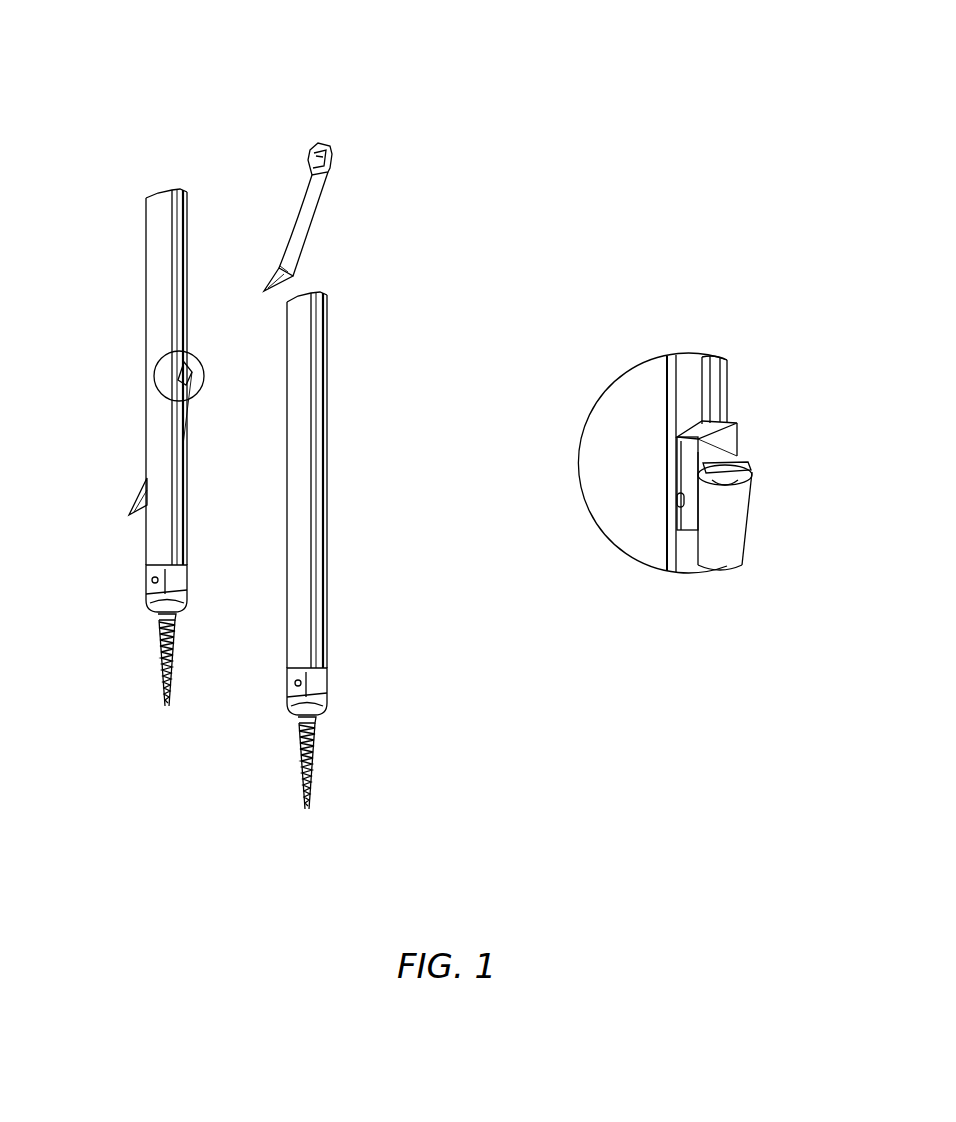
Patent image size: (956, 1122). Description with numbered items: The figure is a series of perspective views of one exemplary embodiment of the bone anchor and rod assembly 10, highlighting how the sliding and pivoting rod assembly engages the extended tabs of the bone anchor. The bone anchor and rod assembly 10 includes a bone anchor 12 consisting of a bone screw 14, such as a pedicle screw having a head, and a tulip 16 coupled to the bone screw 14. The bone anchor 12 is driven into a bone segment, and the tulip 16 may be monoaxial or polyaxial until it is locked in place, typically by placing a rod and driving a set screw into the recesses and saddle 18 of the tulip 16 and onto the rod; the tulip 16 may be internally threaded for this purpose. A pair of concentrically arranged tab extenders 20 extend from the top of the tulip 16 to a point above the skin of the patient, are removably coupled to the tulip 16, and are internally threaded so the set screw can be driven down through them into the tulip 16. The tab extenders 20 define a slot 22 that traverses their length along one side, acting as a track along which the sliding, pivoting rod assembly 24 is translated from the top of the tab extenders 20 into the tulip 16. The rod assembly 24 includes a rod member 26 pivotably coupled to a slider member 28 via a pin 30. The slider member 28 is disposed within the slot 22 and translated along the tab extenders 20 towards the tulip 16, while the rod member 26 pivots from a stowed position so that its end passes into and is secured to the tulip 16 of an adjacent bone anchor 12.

The bone anchor and rod assembly 10 is at (396, 208).
The bone anchor 12 is at (324, 727).
The bone screw 14 is at (160, 656).
The tulip 16 is at (148, 586).
The saddle 18 is at (324, 679).
The tab extenders 20 is at (335, 390).
The slot 22 is at (322, 456).
The rod assembly 24 is at (286, 210).
The rod member 26 is at (745, 516).
The slider member 28 is at (739, 432).
The pin 30 is at (678, 503).